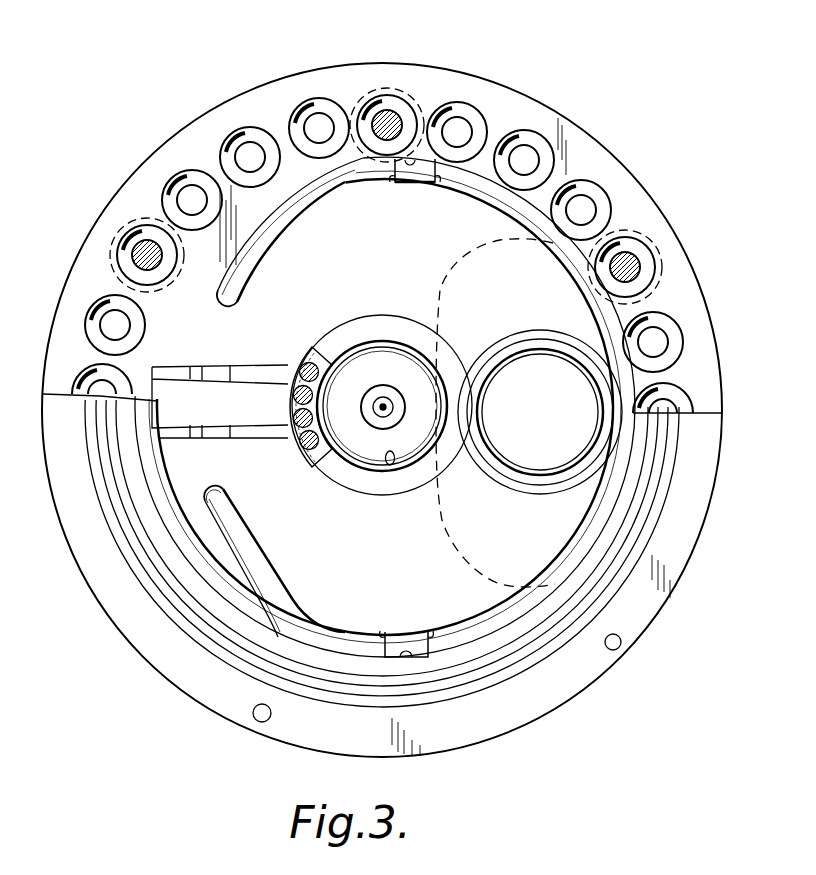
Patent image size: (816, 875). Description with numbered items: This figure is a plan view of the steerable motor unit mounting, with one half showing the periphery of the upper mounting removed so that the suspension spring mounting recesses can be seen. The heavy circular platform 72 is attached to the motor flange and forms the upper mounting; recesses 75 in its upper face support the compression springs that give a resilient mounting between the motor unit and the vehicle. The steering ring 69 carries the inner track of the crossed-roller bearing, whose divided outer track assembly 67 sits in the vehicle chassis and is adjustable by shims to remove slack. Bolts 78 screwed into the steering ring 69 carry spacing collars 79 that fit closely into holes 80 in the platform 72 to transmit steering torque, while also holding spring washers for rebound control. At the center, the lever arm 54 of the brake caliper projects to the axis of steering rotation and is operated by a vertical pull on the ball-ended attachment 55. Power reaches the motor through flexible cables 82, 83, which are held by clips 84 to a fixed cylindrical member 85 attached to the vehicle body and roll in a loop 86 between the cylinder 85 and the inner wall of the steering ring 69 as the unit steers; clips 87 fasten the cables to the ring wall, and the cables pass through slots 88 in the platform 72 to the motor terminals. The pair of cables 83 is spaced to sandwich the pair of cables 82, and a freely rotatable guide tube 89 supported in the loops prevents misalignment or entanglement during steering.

The lever arm 54 is at (350, 350).
The ball-ended attachment 55 is at (386, 398).
The divided outer track assembly 67 is at (598, 665).
The steering ring 69 is at (175, 458).
The circular platform 72 is at (596, 146).
The recesses 75 is at (223, 146).
The bolts 78 is at (397, 122).
The spacing collars 79 is at (663, 278).
The holes 80 is at (387, 95).
The flexible cables 82 is at (262, 585).
The flexible cables 83 is at (262, 272).
The clips 84 is at (332, 463).
The fixed cylindrical member 85 is at (390, 466).
The loop 86 is at (498, 243).
The clips 87 is at (420, 186).
The slots 88 is at (218, 492).
The guide tube 89 is at (533, 348).